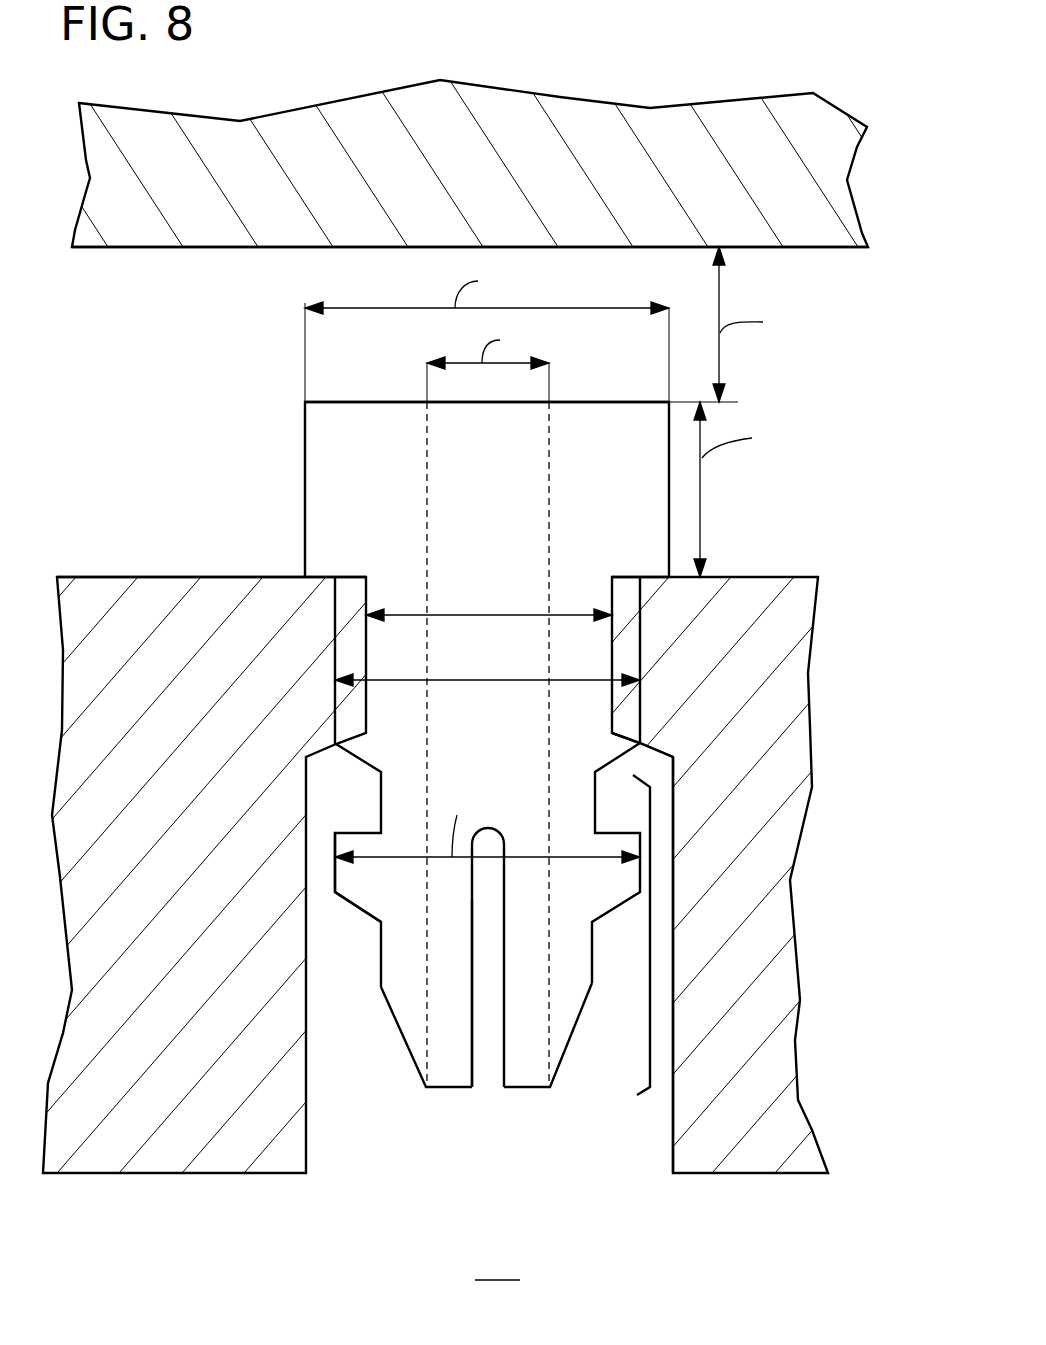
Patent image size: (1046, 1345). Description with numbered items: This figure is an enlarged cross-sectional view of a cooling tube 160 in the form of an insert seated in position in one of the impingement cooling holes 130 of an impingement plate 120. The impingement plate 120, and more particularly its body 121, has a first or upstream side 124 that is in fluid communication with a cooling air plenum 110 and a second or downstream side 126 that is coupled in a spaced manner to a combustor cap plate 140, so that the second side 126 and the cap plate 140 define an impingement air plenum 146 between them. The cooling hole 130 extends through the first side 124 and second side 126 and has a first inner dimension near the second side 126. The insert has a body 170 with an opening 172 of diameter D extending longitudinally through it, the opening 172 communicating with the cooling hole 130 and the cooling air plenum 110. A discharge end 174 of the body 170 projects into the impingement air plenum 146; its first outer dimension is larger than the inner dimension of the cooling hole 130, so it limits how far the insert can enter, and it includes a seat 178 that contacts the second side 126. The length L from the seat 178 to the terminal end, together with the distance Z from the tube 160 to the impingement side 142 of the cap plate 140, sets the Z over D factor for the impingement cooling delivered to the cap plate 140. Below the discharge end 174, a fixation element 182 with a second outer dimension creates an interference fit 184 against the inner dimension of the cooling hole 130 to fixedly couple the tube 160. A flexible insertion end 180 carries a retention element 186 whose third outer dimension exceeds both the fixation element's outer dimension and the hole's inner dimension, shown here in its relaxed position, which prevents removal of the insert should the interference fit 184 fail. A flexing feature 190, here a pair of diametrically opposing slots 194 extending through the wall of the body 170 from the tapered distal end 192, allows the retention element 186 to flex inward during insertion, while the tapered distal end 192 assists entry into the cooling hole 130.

The cooling air plenum 110 is at (498, 1267).
The impingement plate 120 is at (595, 875).
The body 121 is at (783, 627).
The first side 124 is at (260, 1174).
The second side 126 is at (95, 577).
The impingement cooling hole 130 is at (673, 1123).
The combustor cap plate 140 is at (835, 203).
The impingement side 142 is at (793, 248).
The impingement air plenum 146 is at (197, 405).
The cooling tube 160 is at (585, 441).
The body 170 is at (381, 792).
The opening 172 is at (550, 1030).
The discharge end 174 is at (544, 423).
The seat 178 is at (657, 583).
The flexible insertion end 180 is at (660, 942).
The fixation element 182 is at (732, 583).
The interference fit 184 is at (642, 652).
The retention element 186 is at (367, 873).
The flexing feature 190 is at (480, 1086).
The tapered distal end 192 is at (403, 1040).
The slot 194 is at (472, 977).